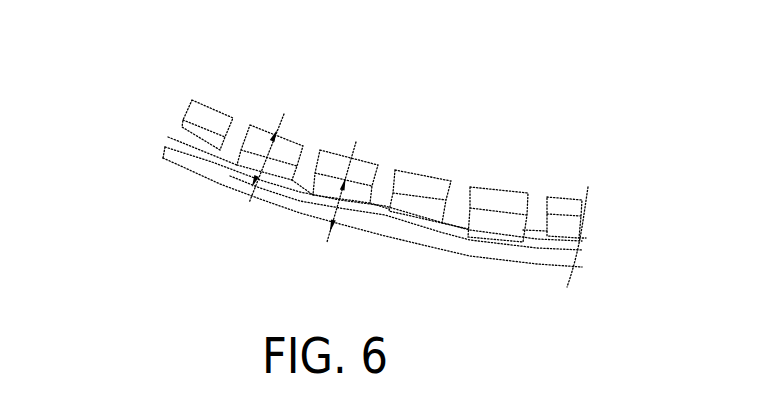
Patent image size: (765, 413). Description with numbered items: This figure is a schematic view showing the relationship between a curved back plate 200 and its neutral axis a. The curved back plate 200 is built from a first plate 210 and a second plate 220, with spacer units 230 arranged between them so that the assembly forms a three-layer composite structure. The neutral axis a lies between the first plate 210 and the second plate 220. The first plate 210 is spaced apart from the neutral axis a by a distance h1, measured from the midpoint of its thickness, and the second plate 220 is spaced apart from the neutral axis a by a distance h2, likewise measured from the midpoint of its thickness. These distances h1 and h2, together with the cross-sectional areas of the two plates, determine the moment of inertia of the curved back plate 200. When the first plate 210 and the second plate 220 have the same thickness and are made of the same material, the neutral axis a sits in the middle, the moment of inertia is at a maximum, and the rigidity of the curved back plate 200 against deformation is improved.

The curved back plate 200 is at (200, 31).
The first plate 210 is at (182, 110).
The second plate 220 is at (163, 150).
The spacer units 230 is at (450, 237).
The neutral axis a is at (163, 129).
The distance h1 is at (280, 204).
The distance h2 is at (342, 212).